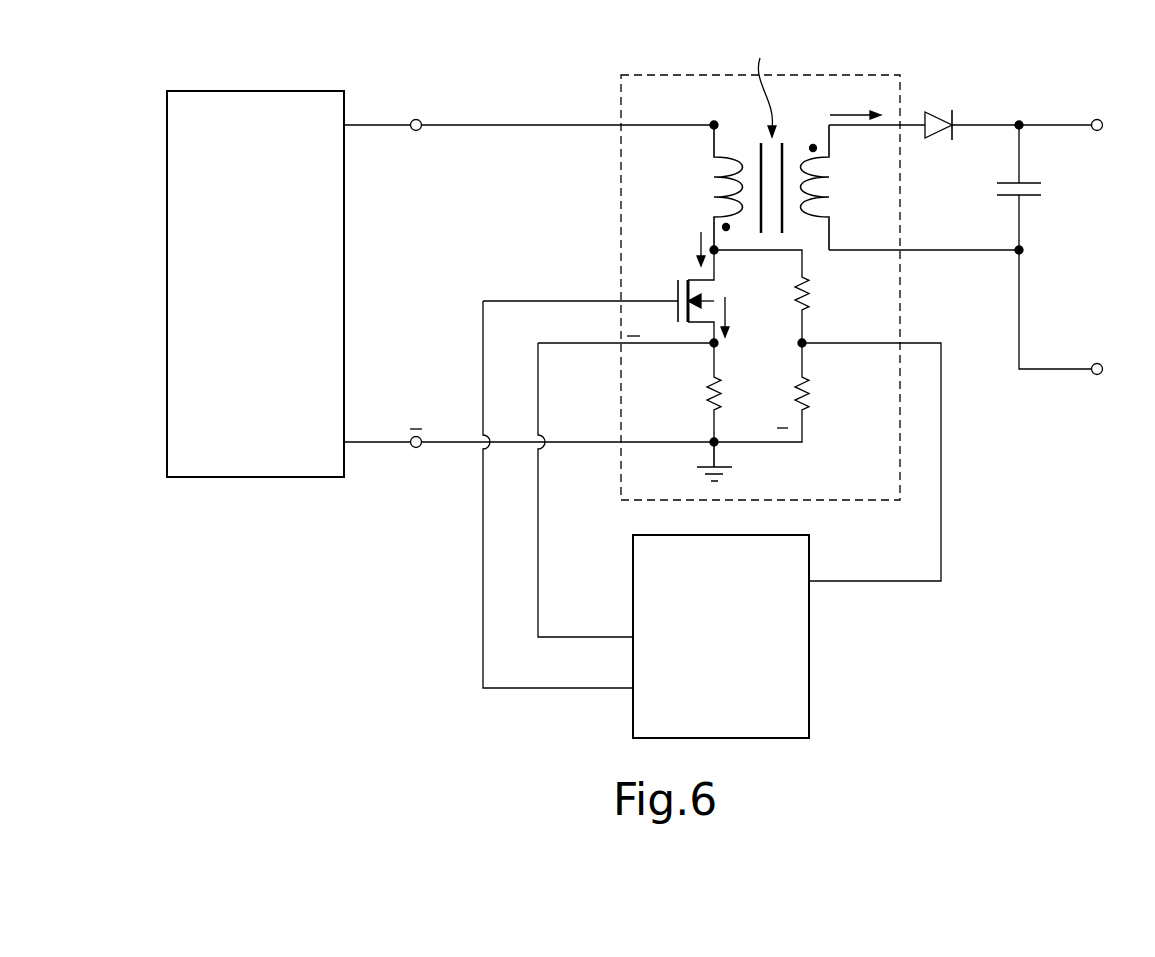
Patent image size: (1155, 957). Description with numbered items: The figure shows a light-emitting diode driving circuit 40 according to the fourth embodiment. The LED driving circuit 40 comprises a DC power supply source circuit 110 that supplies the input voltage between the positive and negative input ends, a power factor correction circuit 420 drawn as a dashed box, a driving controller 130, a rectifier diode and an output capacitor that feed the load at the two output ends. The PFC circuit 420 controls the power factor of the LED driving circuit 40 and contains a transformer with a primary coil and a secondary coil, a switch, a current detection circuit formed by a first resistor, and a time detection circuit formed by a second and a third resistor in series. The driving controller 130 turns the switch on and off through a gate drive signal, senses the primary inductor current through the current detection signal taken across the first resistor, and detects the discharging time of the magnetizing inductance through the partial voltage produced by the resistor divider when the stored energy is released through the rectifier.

The LED driving circuit 40 is at (1089, 688).
The DC power supply source circuit 110 is at (274, 331).
The driving controller 130 is at (702, 678).
The power factor correction circuit 420 is at (827, 74).